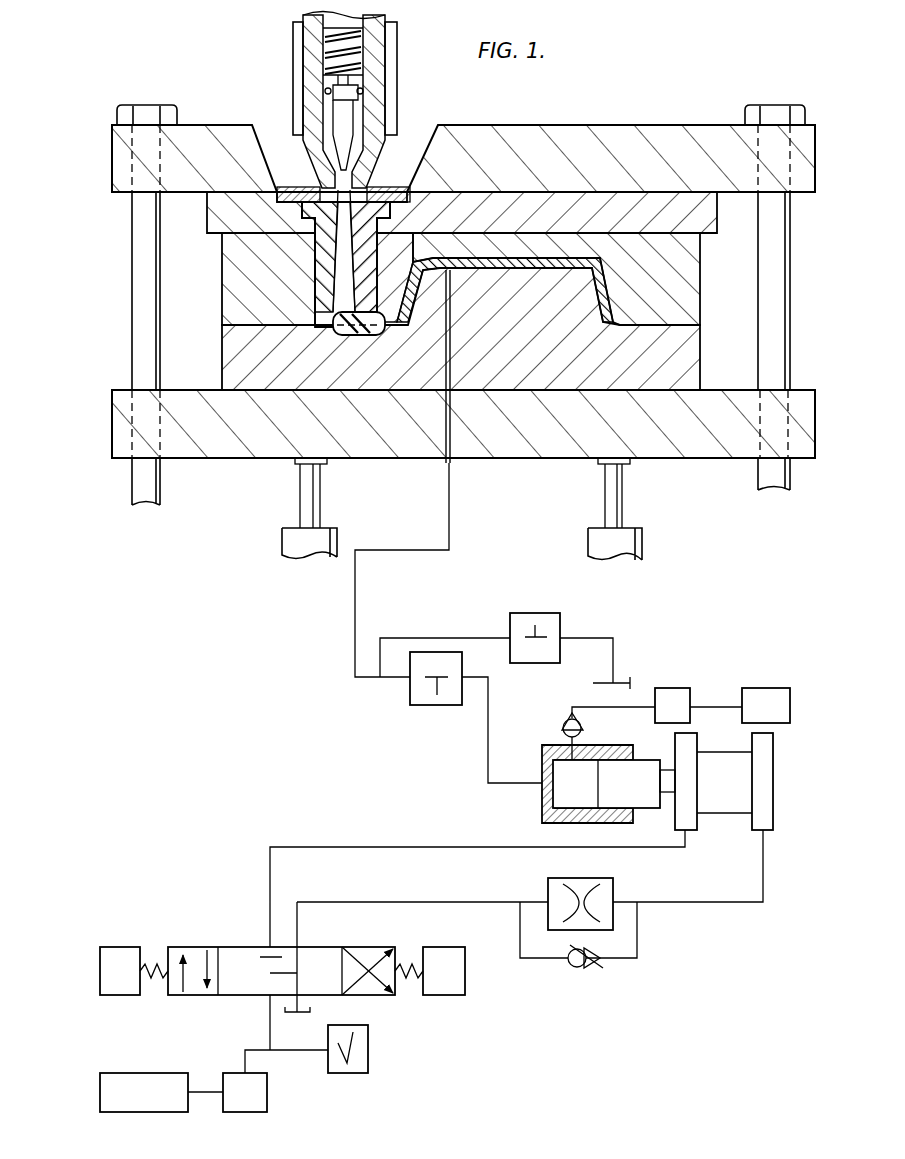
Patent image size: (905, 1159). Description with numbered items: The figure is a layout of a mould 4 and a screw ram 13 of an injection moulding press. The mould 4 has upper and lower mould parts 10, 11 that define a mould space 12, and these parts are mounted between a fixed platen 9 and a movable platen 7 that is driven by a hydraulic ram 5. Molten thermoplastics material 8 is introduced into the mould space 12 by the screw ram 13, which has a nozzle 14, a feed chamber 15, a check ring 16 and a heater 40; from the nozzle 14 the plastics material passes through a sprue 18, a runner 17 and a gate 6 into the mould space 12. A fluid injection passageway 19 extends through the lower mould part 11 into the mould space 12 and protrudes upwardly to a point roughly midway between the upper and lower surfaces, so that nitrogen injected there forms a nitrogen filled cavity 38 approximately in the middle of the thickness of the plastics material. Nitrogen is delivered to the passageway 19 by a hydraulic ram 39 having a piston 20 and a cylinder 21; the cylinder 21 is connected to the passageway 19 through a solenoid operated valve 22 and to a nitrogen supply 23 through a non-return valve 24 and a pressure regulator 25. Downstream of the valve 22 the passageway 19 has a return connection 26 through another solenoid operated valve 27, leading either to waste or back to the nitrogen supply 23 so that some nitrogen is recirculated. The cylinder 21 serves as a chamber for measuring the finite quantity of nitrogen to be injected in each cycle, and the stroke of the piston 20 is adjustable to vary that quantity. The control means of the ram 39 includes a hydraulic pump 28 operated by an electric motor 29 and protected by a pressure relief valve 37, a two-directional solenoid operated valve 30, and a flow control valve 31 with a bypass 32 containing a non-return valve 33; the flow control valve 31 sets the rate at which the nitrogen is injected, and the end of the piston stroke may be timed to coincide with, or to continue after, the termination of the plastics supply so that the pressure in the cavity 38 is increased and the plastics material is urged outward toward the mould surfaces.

The mould 4 is at (718, 262).
The hydraulic ram 5 is at (283, 540).
The gate 6 is at (380, 336).
The platen 7 is at (193, 446).
The molten thermoplastics material 8 is at (410, 265).
The fixed platen 9 is at (627, 134).
The upper mould part 10 is at (688, 293).
The lower mould part 11 is at (690, 356).
The mould space 12 is at (530, 252).
The screw ram 13 is at (290, 65).
The nozzle 14 is at (305, 150).
The feed chamber 15 is at (333, 117).
The check ring 16 is at (365, 90).
The runner 17 is at (363, 332).
The sprue 18 is at (308, 190).
The fluid injection passageway 19 is at (452, 418).
The piston 20 is at (645, 765).
The cylinder 21 is at (542, 815).
The solenoid operated valve 22 is at (410, 690).
The nitrogen supply 23 is at (767, 688).
The non-return valve 24 is at (560, 725).
The pressure regulator 25 is at (672, 688).
The return connection 26 is at (462, 638).
The solenoid operated valve 27 is at (545, 613).
The hydraulic pump 28 is at (267, 1097).
The electric motor 29 is at (150, 1073).
The two-directional solenoid operated valve 30 is at (247, 940).
The flow control valve 31 is at (613, 888).
The bypass 32 is at (520, 927).
The non-return valve 33 is at (582, 966).
The pressure relief valve 37 is at (368, 1061).
The nitrogen filled cavity 38 is at (497, 265).
The hydraulic ram 39 is at (722, 800).
The heater 40 is at (293, 35).